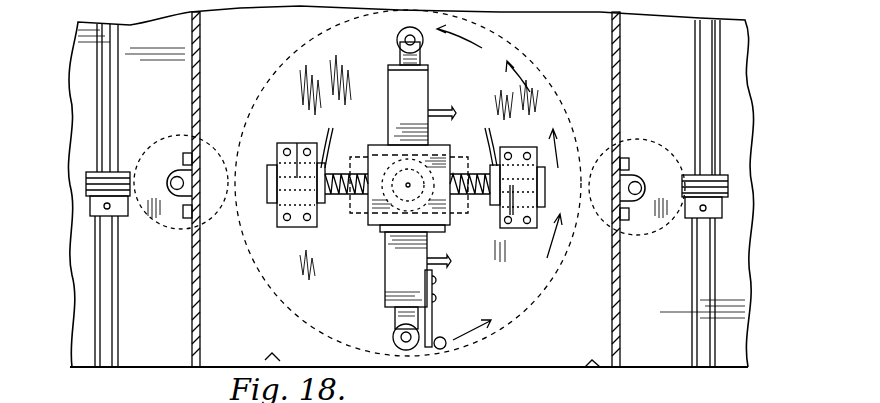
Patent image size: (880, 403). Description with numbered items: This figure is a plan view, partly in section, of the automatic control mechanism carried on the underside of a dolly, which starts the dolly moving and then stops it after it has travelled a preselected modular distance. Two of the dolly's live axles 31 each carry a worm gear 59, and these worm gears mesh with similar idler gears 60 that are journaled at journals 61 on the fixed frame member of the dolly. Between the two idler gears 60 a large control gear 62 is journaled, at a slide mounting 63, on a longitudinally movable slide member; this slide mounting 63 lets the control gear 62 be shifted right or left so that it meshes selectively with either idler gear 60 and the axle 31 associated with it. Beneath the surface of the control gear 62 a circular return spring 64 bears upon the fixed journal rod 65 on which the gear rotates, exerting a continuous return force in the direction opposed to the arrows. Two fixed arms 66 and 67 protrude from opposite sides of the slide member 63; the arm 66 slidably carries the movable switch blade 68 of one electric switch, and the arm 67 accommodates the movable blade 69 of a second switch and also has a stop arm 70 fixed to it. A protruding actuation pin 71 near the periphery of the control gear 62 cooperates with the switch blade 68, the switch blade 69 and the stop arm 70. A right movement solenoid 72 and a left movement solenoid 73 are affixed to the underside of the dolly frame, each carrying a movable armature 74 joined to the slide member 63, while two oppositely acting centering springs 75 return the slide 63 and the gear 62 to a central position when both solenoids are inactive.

The live axle 31 is at (118, 95).
The worm gear 59 is at (88, 196).
The idler gear 60 is at (163, 135).
The journal 61 is at (177, 177).
The control gear 62 is at (259, 97).
The slide member 63 is at (377, 145).
The return spring 64 is at (394, 176).
The journal rod 65 is at (395, 198).
The fixed arm 66 is at (420, 88).
The fixed arm 67 is at (385, 258).
The movable switch blade 68 is at (398, 40).
The movable switch blade 69 is at (394, 334).
The stop arm 70 is at (432, 315).
The actuation pin 71 is at (446, 339).
The right movement solenoid 72 is at (545, 178).
The left movement solenoid 73 is at (276, 165).
The movable armature 74 is at (342, 196).
The centering spring 75 is at (331, 175).